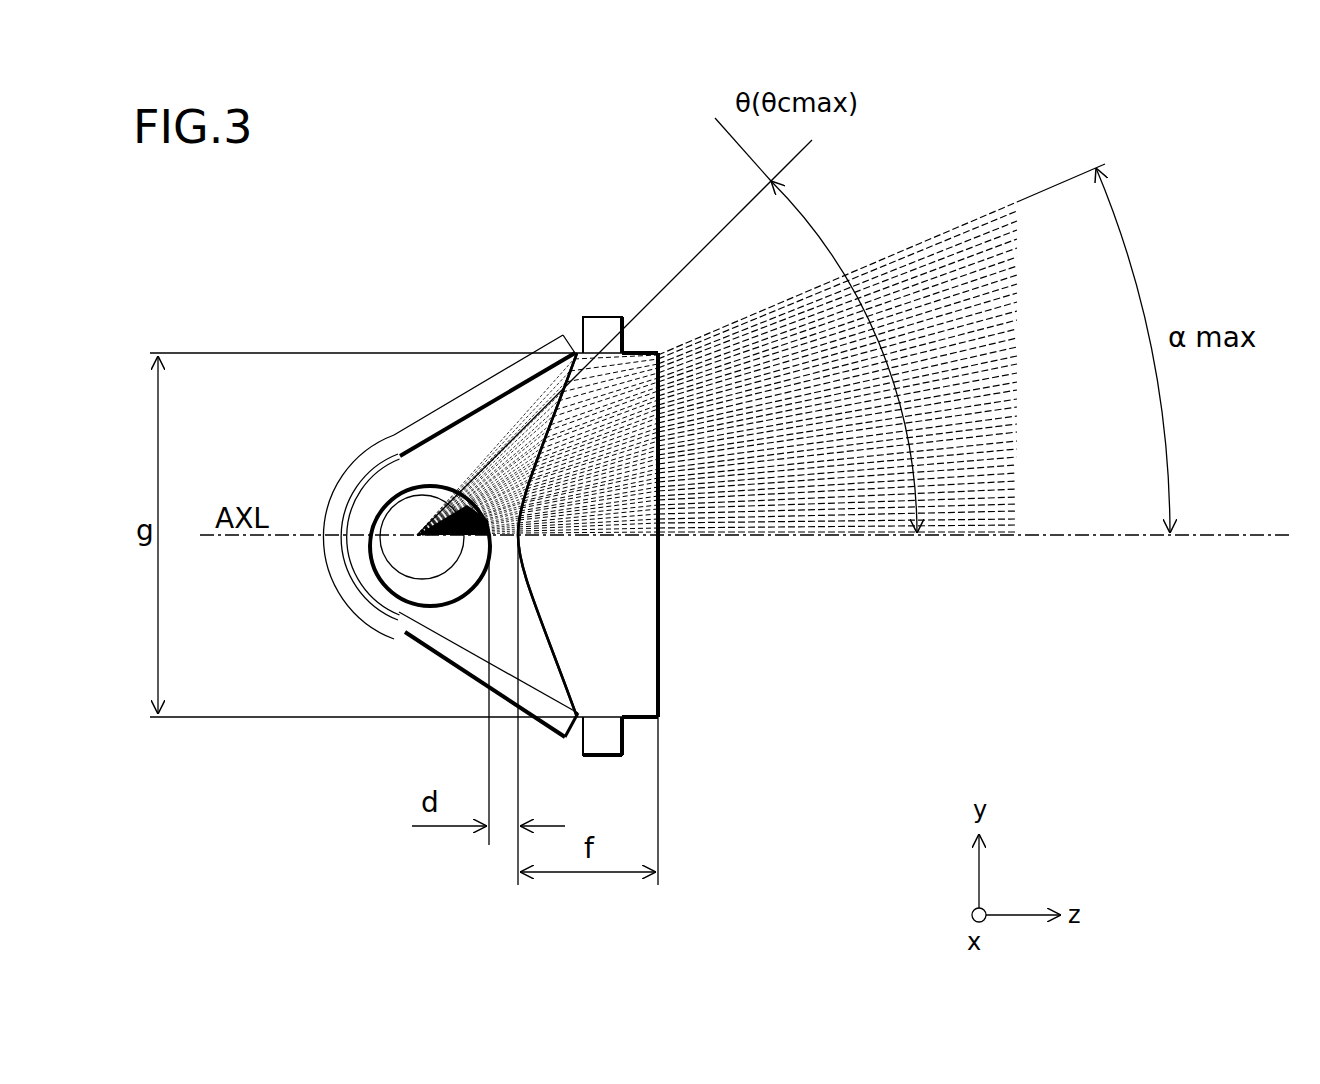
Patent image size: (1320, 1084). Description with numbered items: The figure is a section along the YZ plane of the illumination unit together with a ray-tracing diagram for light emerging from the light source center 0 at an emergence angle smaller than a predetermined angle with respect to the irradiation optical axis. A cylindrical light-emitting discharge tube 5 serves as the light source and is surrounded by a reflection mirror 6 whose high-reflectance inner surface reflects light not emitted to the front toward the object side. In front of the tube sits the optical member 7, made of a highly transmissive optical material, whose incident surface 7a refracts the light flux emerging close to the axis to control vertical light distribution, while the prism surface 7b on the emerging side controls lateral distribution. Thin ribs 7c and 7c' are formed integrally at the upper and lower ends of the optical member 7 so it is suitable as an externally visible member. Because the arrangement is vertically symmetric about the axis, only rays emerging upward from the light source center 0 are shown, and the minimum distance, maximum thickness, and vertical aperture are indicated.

The light-emitting discharge tube 5 is at (383, 486).
The reflection mirror 6 is at (335, 553).
The light source center 0 is at (413, 537).
The optical member 7 is at (647, 668).
The incident surface 7a is at (537, 425).
The prism surface 7b is at (663, 467).
The thin rib 7c is at (585, 301).
The thin rib 7c' is at (659, 766).